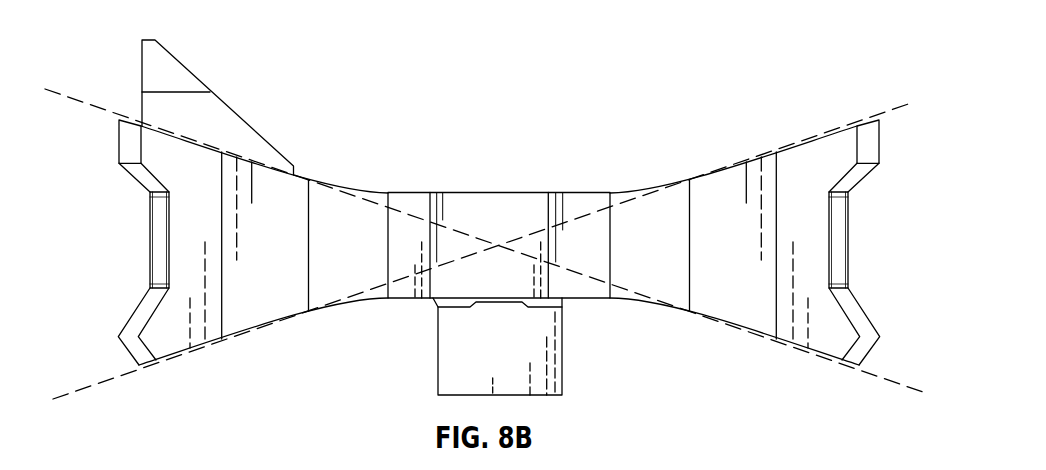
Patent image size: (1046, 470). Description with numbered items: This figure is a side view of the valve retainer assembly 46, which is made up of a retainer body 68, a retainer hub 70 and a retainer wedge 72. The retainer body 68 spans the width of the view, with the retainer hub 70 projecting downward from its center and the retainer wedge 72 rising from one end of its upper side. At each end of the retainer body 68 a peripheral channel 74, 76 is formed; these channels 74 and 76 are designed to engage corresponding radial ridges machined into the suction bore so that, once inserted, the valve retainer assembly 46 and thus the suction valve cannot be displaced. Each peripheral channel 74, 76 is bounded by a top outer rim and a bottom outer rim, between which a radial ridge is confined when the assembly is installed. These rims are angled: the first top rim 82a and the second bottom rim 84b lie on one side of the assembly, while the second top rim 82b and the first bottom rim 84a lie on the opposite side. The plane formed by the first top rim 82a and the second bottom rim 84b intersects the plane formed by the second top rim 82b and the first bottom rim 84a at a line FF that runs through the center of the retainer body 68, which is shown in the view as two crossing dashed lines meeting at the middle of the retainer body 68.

The valve retainer assembly 46 is at (578, 207).
The retainer body 68 is at (357, 212).
The retainer hub 70 is at (538, 355).
The retainer wedge 72 is at (220, 113).
The peripheral channel 74 is at (838, 240).
The peripheral channel 76 is at (160, 242).
The first top rim 82a is at (128, 140).
The second top rim 82b is at (878, 138).
The first bottom rim 84a is at (130, 355).
The second bottom rim 84b is at (860, 347).
The line FF is at (497, 240).